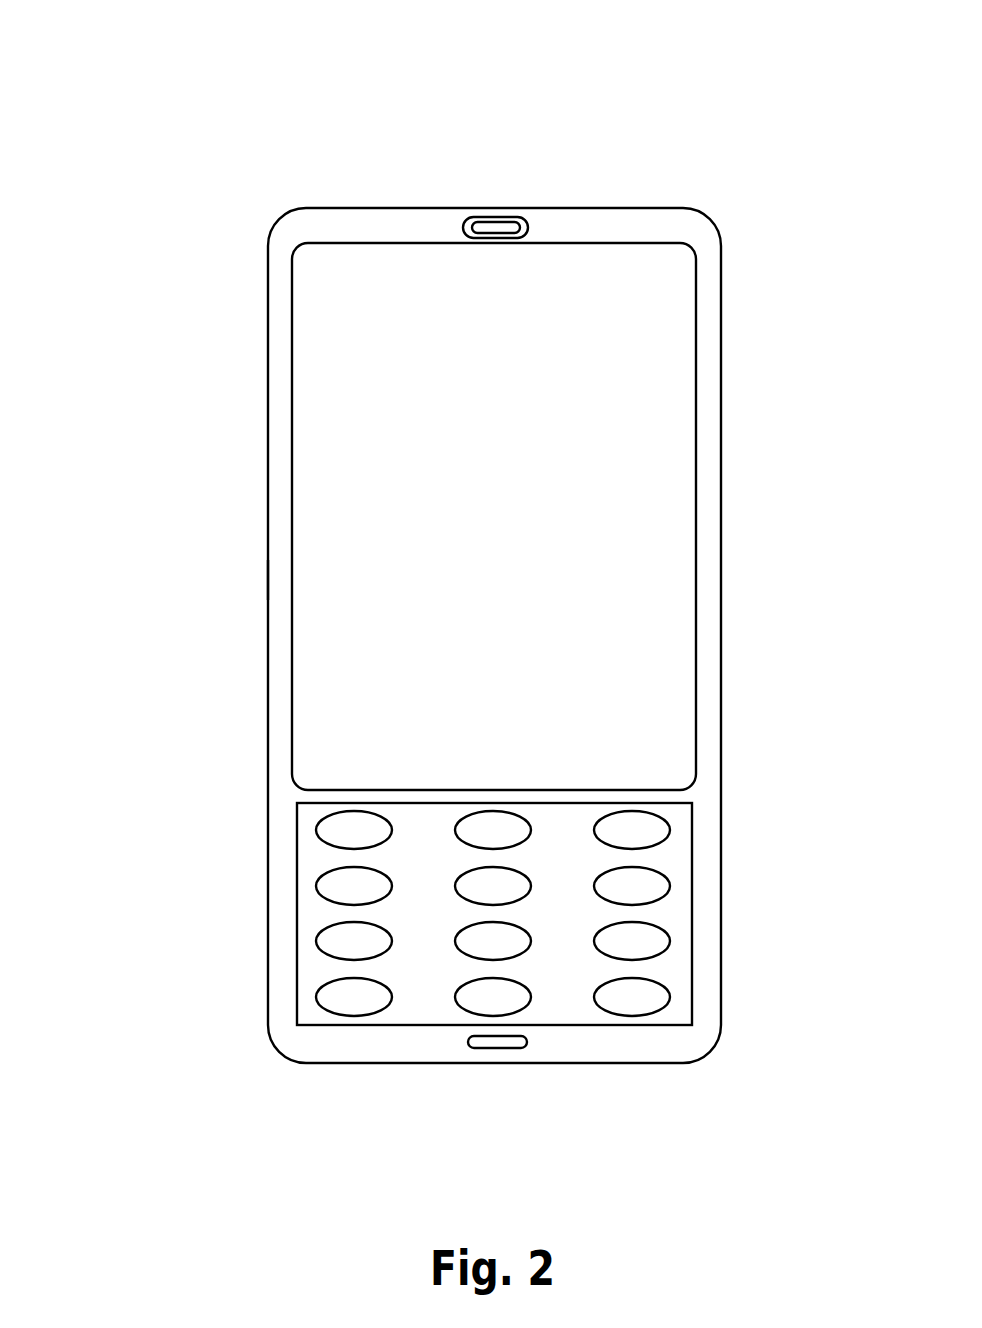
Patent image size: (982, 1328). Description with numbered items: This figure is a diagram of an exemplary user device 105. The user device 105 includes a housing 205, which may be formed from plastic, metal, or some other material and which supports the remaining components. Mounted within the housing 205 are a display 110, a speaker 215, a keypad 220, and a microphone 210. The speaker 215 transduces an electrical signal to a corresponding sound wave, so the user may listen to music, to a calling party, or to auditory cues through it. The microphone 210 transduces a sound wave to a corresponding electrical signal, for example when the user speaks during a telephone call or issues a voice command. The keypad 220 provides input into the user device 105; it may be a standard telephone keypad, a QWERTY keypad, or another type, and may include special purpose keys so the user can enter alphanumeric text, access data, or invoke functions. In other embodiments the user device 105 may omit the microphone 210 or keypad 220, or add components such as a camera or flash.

The user device 105 is at (218, 66).
The display 110 is at (678, 492).
The housing 205 is at (268, 558).
The microphone 210 is at (513, 1049).
The speaker 215 is at (505, 216).
The keypad 220 is at (732, 1015).